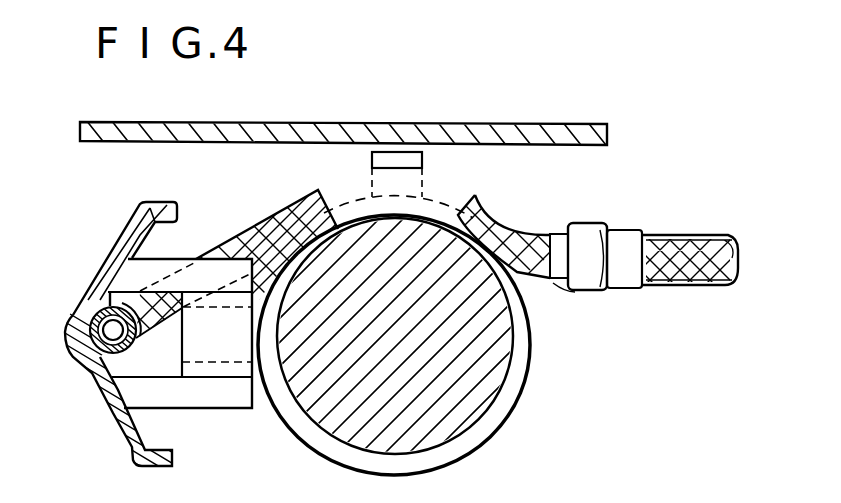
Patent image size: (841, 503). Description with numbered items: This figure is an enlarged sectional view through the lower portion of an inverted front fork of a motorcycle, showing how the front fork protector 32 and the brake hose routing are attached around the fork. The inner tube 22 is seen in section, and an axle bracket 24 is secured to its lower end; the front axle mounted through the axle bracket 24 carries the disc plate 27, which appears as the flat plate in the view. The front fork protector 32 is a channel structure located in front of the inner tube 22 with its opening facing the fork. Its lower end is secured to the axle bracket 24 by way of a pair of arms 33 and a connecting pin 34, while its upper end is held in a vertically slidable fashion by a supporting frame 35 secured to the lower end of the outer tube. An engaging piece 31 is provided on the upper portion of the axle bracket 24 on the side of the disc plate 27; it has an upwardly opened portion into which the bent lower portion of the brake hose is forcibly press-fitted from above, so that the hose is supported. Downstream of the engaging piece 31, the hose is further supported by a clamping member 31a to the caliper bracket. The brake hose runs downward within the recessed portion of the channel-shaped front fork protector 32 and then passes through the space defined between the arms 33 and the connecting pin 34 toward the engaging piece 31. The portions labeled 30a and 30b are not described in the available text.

The inner tube 22 is at (483, 396).
The axle bracket 24 is at (468, 443).
The disc plate 27 is at (313, 122).
The upper arm portion of holder 30a is at (275, 210).
The lower arm portion of holder 30b is at (70, 317).
The engaging piece 31 is at (397, 152).
The clamping member 31a is at (601, 229).
The front fork protector 32 is at (113, 408).
The arms 33 is at (174, 259).
The connecting pin 34 is at (222, 372).
The supporting frame 35 is at (449, 188).